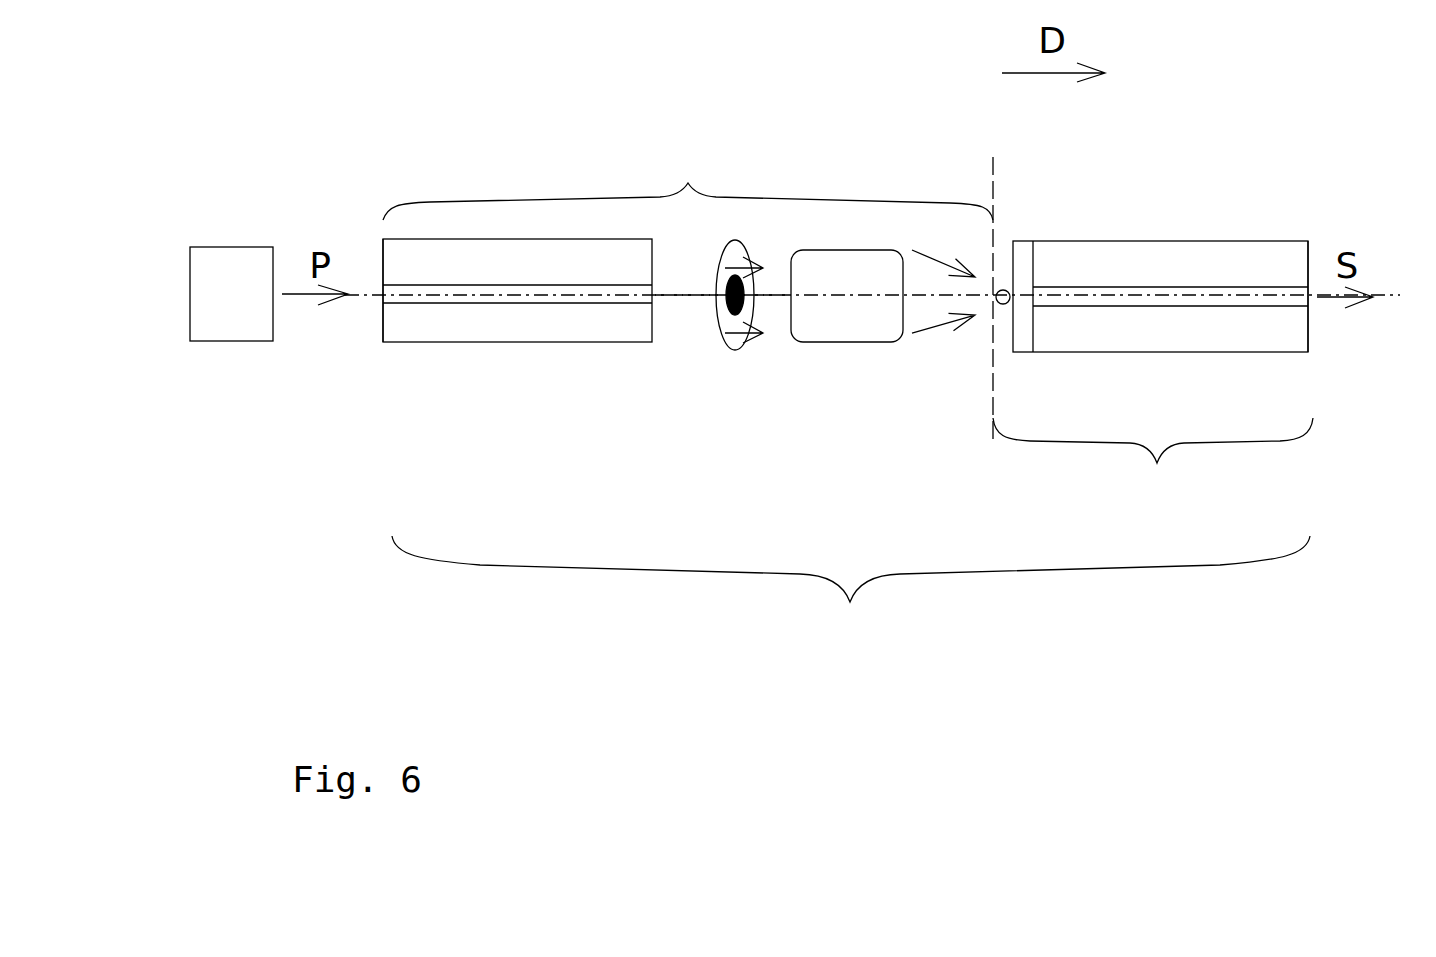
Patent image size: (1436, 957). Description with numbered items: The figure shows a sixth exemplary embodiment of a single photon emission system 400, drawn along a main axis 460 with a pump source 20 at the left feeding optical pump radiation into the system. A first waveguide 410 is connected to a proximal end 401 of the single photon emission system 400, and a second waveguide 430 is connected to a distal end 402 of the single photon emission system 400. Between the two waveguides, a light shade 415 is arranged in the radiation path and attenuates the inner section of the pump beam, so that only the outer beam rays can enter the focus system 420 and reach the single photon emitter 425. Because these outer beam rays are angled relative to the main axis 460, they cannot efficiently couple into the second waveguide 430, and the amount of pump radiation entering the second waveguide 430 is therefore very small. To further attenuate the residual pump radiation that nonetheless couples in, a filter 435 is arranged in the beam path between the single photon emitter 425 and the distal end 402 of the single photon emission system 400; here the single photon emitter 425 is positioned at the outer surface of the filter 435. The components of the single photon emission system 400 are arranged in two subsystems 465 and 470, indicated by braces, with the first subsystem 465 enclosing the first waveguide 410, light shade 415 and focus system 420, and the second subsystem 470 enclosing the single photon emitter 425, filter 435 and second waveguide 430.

The light source 20 is at (231, 294).
The single photon emission system 400 is at (851, 598).
The proximal end 401 is at (383, 290).
The distal end 402 is at (1308, 297).
The first waveguide 410 is at (485, 333).
The light shade 415 is at (735, 341).
The focus system 420 is at (863, 333).
The single photon emitter 425 is at (1004, 290).
The second waveguide 430 is at (1233, 260).
The filter 435 is at (1022, 343).
The main axis 460 is at (670, 297).
The first subsystem 465 is at (688, 177).
The second subsystem 470 is at (1153, 469).